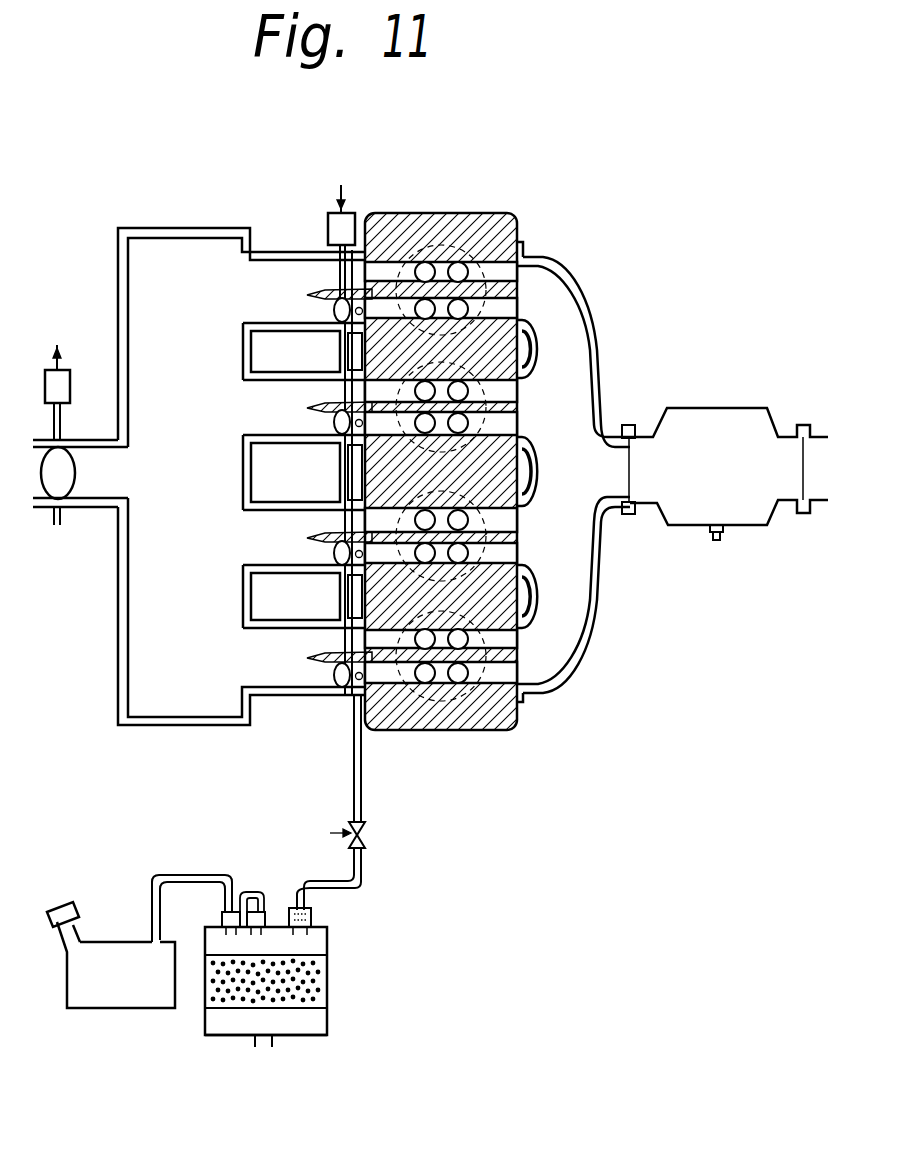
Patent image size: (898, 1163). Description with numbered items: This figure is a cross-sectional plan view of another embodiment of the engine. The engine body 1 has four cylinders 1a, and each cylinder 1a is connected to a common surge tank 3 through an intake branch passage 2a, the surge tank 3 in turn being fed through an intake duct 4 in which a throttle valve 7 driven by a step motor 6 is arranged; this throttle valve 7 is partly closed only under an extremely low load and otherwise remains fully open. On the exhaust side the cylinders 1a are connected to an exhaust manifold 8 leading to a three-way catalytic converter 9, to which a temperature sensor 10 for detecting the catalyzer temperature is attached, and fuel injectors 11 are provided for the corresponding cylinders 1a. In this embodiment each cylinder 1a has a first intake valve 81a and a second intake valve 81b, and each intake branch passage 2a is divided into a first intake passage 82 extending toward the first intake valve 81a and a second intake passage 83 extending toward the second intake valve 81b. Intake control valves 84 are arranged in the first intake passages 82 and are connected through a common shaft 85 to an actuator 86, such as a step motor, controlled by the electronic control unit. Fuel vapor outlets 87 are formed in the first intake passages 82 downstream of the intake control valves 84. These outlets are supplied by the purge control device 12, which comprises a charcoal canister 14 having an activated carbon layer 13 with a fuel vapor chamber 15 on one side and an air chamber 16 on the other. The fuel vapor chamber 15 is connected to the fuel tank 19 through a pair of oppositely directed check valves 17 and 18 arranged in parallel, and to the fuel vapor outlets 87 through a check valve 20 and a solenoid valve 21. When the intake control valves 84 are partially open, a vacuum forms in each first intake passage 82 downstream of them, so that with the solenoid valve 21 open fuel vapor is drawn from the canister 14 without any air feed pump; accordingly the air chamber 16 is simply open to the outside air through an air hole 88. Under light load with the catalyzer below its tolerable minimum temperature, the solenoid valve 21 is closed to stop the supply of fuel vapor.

The engine body 1 is at (531, 204).
The cylinder 1a is at (540, 260).
The intake branch passage 2a is at (290, 276).
The surge tank 3 is at (187, 228).
The intake duct 4 is at (100, 438).
The step motor 6 is at (60, 387).
The throttle valve 7 is at (65, 473).
The exhaust manifold 8 is at (567, 313).
The three-way catalytic converter 9 is at (717, 407).
The temperature sensor 10 is at (713, 541).
The fuel injector 11 is at (397, 215).
The purge control device 12 is at (345, 964).
The activated carbon layer 13 is at (330, 985).
The charcoal canister 14 is at (330, 1013).
The fuel vapor chamber 15 is at (327, 942).
The air chamber 16 is at (300, 1025).
The check valve 17 is at (262, 908).
The check valve 18 is at (225, 915).
The fuel tank 19 is at (110, 940).
The check valve 20 is at (315, 917).
The solenoid valve 21 is at (350, 826).
The first intake valve 81a is at (458, 262).
The second intake valve 81b is at (425, 262).
The first intake passage 82 is at (372, 300).
The second intake passage 83 is at (378, 288).
The intake control valve 84 is at (334, 312).
The common shaft 85 is at (318, 250).
The actuator 86 is at (332, 203).
The fuel vapor outlet 87 is at (350, 348).
The air hole 88 is at (265, 1048).